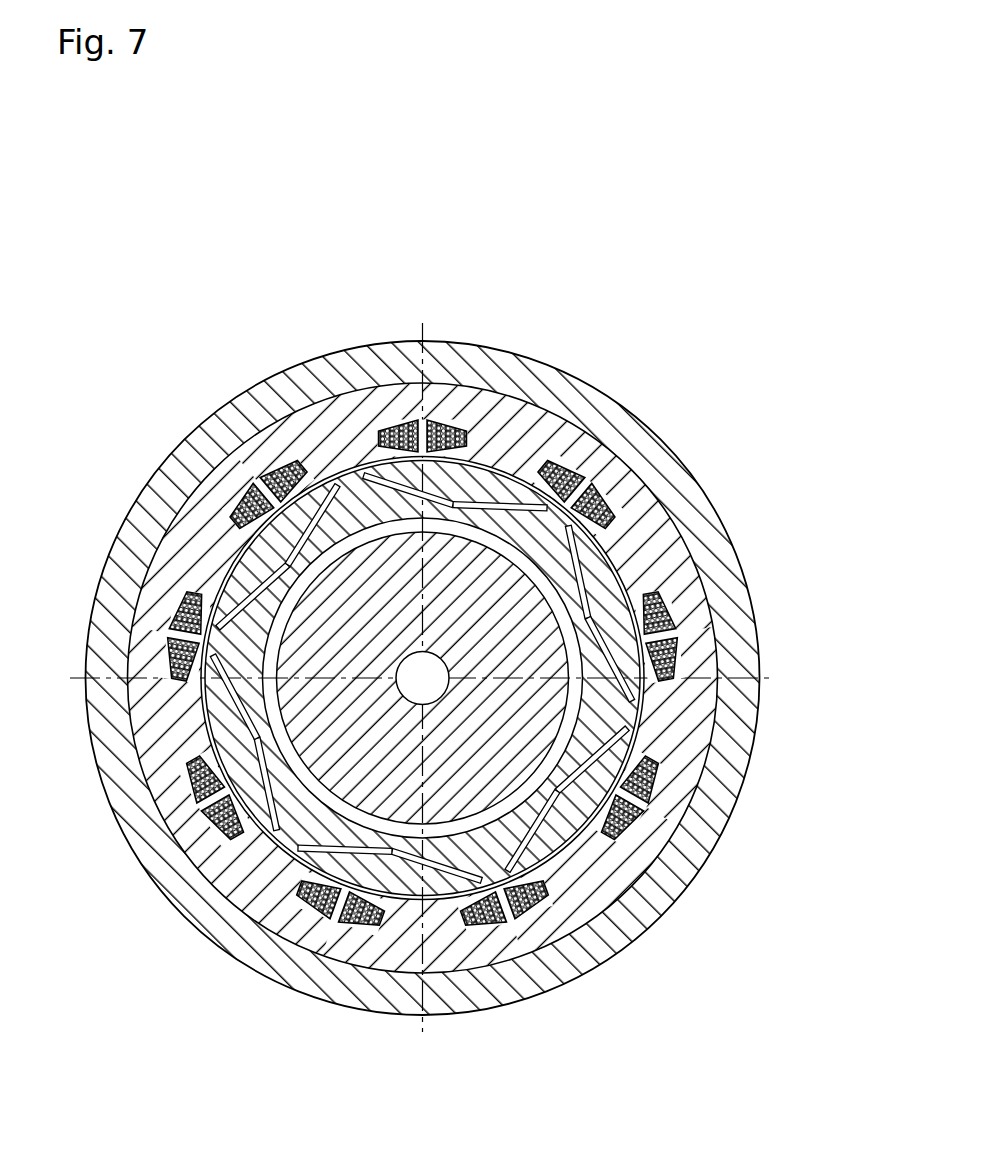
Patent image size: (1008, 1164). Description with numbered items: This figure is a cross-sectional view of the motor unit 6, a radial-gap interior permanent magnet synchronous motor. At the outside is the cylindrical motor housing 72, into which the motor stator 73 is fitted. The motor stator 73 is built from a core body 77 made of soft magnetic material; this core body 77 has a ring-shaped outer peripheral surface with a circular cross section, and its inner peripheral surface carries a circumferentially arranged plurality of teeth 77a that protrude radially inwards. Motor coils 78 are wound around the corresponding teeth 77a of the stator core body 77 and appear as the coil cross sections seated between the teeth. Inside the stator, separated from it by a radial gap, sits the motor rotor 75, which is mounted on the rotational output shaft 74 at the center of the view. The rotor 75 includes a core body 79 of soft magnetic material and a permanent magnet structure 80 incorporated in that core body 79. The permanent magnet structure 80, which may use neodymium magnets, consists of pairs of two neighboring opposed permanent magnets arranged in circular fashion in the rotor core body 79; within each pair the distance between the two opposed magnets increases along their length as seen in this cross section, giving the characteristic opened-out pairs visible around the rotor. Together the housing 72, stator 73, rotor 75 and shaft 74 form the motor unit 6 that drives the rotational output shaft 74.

The motor unit 6 is at (517, 55).
The motor housing 72 is at (223, 405).
The motor stator 73 is at (461, 38).
The rotational output shaft 74 is at (408, 808).
The motor rotor 75 is at (461, 145).
The core body 77 is at (504, 521).
The teeth 77a is at (622, 558).
The motor coils 78 is at (445, 422).
The core body 79 is at (525, 527).
The permanent magnet structure 80 is at (495, 497).